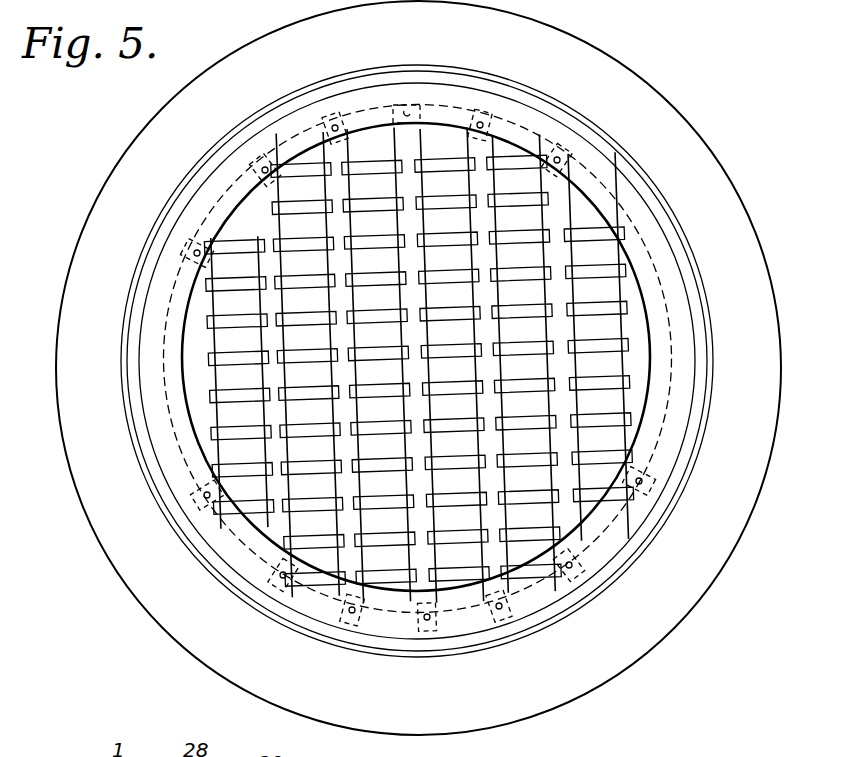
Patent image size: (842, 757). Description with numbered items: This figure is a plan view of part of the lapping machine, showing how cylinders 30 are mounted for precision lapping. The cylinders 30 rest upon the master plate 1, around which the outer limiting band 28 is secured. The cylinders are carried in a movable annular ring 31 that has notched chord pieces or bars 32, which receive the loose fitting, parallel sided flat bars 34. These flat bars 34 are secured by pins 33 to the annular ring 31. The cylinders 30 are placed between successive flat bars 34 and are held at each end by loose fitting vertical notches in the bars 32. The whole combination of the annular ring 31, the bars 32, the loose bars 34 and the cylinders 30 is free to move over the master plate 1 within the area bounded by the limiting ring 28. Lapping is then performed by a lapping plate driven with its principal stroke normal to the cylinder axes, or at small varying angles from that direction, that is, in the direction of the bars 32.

The master plate 1 is at (133, 143).
The outer limiting band 28 is at (675, 492).
The cylinders 30 is at (493, 173).
The movable annular ring 31 is at (230, 530).
The notched chord pieces or bars 32 is at (502, 585).
The pins 33 is at (352, 610).
The flat bars 34 is at (577, 228).